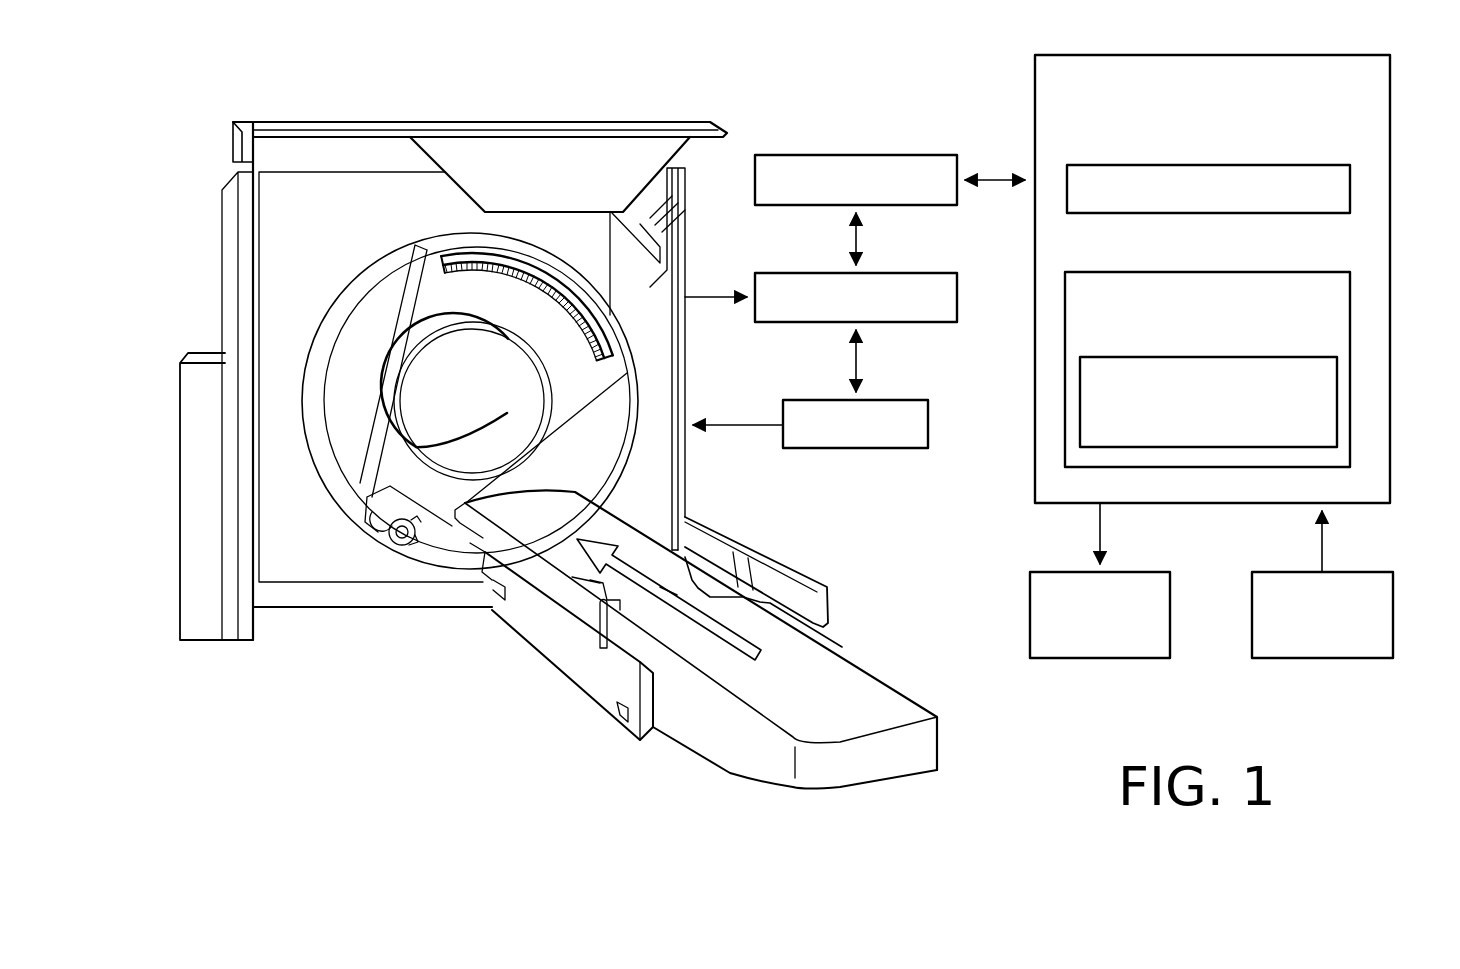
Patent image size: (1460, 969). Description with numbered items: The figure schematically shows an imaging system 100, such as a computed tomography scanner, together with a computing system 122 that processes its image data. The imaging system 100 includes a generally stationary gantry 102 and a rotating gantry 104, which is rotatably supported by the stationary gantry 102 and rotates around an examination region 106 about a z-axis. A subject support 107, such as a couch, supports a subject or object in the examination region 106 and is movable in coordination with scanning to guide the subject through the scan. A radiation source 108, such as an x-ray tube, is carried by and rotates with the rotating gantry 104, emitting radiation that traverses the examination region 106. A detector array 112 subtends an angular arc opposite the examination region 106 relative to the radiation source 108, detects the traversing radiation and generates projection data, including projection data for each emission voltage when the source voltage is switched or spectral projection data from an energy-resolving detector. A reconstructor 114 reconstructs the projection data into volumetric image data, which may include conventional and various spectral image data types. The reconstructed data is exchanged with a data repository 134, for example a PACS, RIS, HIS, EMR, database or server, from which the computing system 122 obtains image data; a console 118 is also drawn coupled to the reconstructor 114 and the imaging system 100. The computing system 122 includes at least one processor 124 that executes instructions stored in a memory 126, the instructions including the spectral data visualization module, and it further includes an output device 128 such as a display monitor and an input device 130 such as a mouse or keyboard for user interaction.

The imaging system 100 is at (174, 126).
The stationary gantry 102 is at (232, 292).
The rotating gantry 104 is at (430, 308).
The examination region 106 is at (483, 404).
The subject support 107 is at (887, 707).
The radiation source 108 is at (402, 543).
The detector array 112 is at (533, 290).
The reconstructor 114 is at (893, 273).
The console 118 is at (893, 400).
The computing system 122 is at (1317, 55).
The processor 124 is at (1278, 165).
The memory 126 is at (1267, 272).
The output device 128 is at (1135, 572).
The input device 130 is at (1350, 572).
The data repository 134 is at (893, 155).